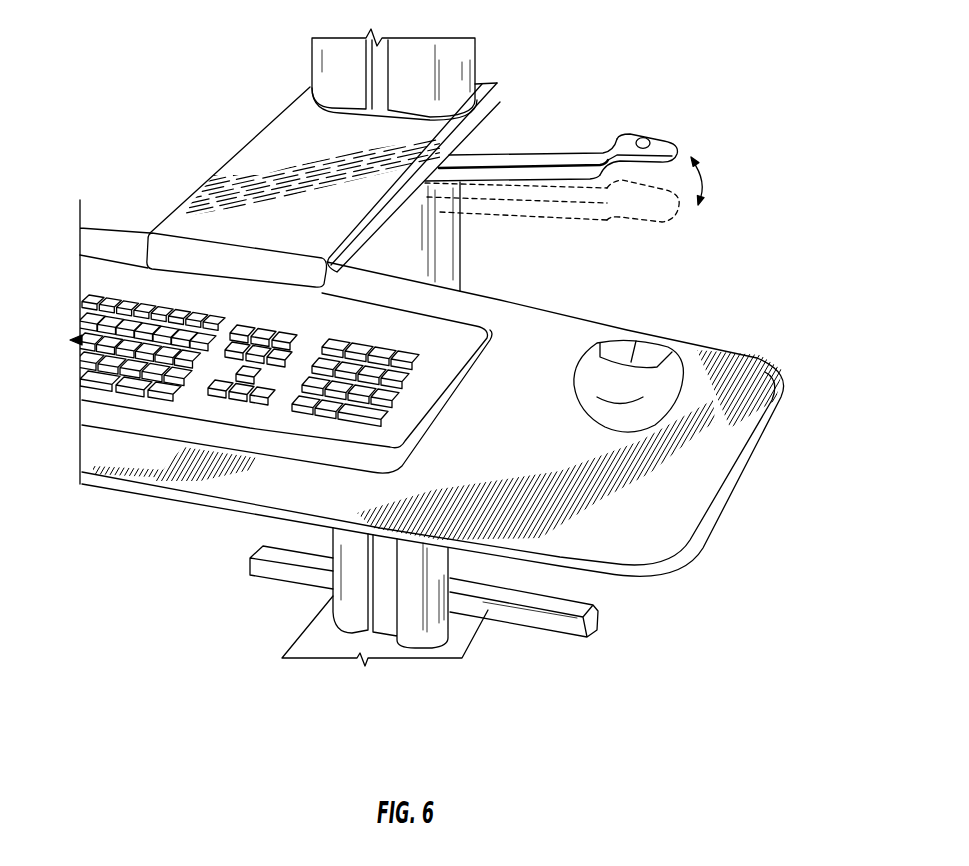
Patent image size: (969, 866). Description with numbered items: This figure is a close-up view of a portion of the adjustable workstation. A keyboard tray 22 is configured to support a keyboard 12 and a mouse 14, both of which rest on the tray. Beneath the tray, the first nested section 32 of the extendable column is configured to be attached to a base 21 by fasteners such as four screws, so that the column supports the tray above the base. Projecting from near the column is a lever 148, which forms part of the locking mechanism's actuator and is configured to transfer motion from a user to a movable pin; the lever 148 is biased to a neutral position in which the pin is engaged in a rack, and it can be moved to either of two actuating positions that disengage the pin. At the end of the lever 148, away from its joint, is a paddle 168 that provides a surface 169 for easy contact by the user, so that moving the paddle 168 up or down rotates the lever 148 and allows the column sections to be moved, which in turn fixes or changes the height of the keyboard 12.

The keyboard 12 is at (105, 275).
The keyboard tray 22 is at (567, 330).
The mouse 14 is at (590, 385).
The lever 148 is at (537, 153).
The paddle 168 is at (676, 148).
The surface 169 is at (648, 136).
The first nested section 32 is at (352, 581).
The base 21 is at (473, 633).